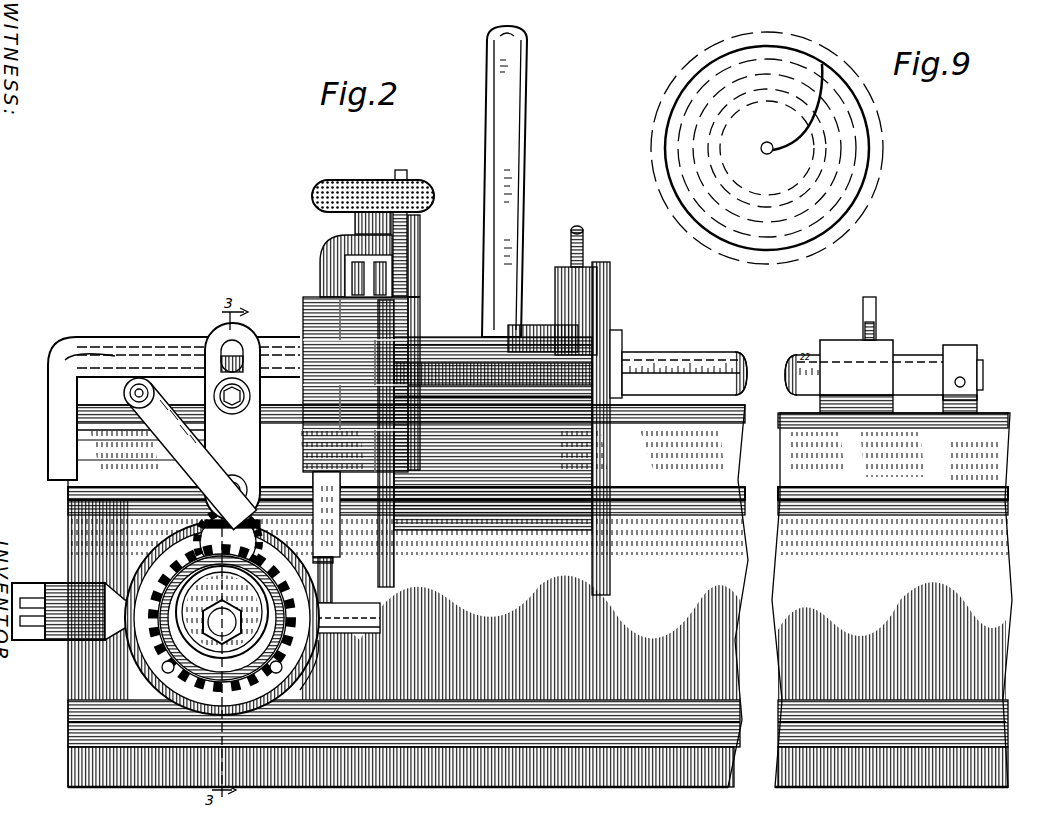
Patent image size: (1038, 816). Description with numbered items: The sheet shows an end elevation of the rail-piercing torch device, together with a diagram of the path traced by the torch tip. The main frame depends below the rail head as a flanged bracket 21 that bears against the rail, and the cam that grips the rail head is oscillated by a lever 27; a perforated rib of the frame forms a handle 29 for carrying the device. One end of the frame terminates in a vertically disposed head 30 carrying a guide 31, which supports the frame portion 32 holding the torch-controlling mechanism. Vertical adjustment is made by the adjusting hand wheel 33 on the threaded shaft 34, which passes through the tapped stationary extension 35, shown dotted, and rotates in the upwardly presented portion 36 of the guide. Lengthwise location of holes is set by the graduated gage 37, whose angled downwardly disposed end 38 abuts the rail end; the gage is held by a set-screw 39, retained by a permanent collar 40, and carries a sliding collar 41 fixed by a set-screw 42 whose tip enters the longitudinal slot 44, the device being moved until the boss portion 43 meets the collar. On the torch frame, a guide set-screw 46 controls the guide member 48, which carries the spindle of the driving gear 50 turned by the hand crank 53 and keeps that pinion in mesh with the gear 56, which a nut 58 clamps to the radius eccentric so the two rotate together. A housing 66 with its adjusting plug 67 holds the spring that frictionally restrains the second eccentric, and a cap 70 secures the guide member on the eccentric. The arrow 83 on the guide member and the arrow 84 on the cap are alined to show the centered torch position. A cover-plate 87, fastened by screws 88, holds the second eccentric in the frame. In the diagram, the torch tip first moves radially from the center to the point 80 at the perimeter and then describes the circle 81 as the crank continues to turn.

In FIG. 2, the flanged bracket 21 is at (497, 508).
In FIG. 2, the lever 27 is at (525, 146).
In FIG. 2, the handle 29 is at (421, 266).
In FIG. 2, the vertically disposed head 30 is at (303, 305).
In FIG. 2, the guide 31 is at (332, 549).
In FIG. 2, the frame portion 32 is at (325, 590).
In FIG. 2, the adjusting hand wheel 33 is at (348, 182).
In FIG. 2, the threaded shaft 34 is at (352, 270).
In FIG. 2, the tapped stationary extension 35 is at (421, 299).
In FIG. 2, the upwardly presented portion 36 is at (420, 238).
In FIG. 2, the gage 37 is at (675, 352).
In FIG. 2, the downwardly disposed end 38 is at (52, 410).
In FIG. 2, the set-screw 39 is at (582, 242).
In FIG. 2, the collar 40 is at (970, 358).
In FIG. 2, the collar 41 is at (833, 340).
In FIG. 2, the set-screw 42 is at (878, 322).
In FIG. 2, the boss portion 43 is at (622, 340).
In FIG. 2, the longitudinal slot 44 is at (723, 358).
In FIG. 2, the guide set-screw 46 is at (212, 385).
In FIG. 2, the guide member 48 is at (216, 332).
In FIG. 2, the driving gear 50 is at (198, 510).
In FIG. 2, the hand crank 53 is at (160, 432).
In FIG. 2, the gear 56 is at (152, 582).
In FIG. 2, the nut 58 is at (162, 545).
In FIG. 2, the housing 66 is at (378, 609).
In FIG. 2, the adjusting plug 67 is at (378, 629).
In FIG. 2, the cap 70 is at (160, 563).
In FIG. 9, the point 80 is at (820, 64).
In FIG. 9, the circle 81 is at (662, 95).
In FIG. 2, the arrow 83 is at (280, 527).
In FIG. 2, the arrow 84 is at (325, 563).
In FIG. 2, the cover-plate 87 is at (300, 688).
In FIG. 2, the screws 88 is at (162, 670).